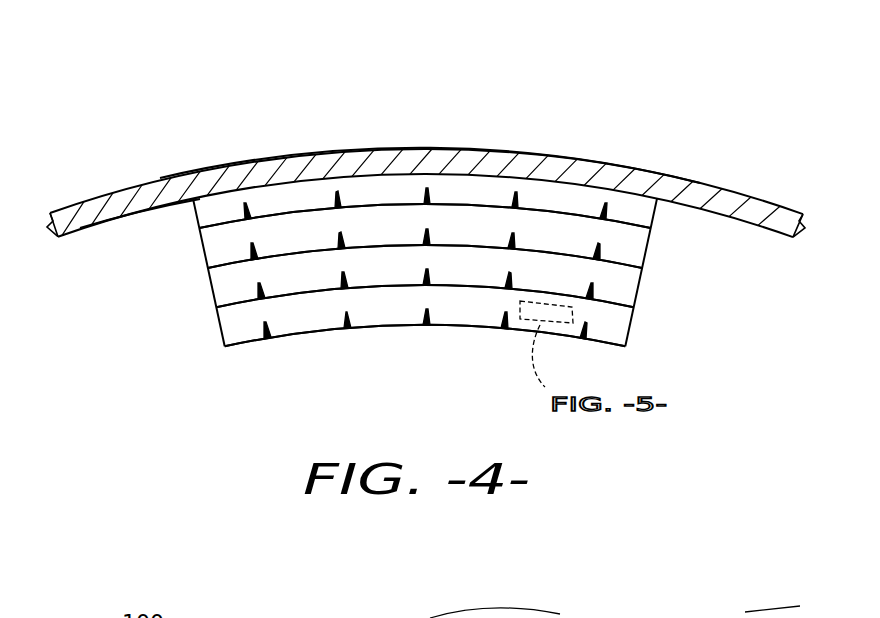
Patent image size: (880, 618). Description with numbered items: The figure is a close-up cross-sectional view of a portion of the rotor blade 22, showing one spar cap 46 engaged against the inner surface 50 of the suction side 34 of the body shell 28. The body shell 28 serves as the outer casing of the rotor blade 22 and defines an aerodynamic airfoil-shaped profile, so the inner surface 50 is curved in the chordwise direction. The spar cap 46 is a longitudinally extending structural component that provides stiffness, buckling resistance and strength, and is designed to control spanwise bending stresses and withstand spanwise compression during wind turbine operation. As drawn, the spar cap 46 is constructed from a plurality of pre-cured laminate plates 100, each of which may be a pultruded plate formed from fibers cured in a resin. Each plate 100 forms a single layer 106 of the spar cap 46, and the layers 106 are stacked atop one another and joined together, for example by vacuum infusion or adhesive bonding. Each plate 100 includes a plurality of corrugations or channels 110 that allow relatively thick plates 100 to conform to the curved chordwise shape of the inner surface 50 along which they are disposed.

The rotor blade 22 is at (227, 82).
The body shell 28 is at (109, 195).
The suction side 34 is at (193, 174).
The inner surface 50 is at (100, 226).
The spar cap 46 is at (196, 330).
The pre-cured laminate plate 100 is at (648, 208).
The layer 106 is at (197, 230).
The channels 110 is at (427, 200).